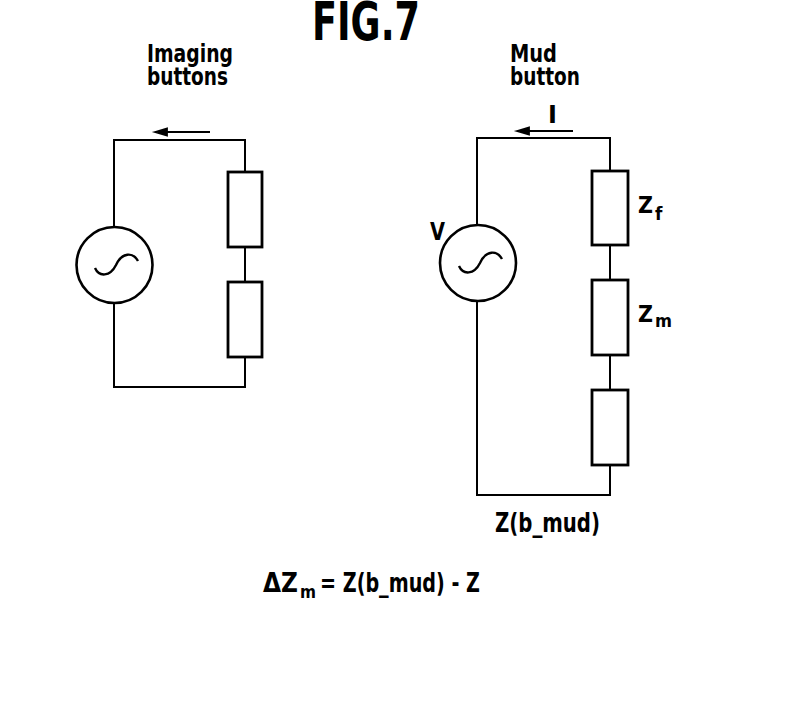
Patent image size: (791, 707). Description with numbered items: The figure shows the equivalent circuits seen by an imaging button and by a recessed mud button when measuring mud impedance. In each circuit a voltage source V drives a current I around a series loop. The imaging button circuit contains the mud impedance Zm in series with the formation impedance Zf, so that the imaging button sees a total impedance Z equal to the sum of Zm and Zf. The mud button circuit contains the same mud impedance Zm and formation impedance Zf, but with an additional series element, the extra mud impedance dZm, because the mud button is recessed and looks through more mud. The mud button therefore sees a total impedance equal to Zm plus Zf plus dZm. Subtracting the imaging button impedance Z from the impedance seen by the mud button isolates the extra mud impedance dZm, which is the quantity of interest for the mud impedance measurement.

The voltage source V is at (110, 260).
The formation impedance Zf is at (263, 209).
The mud impedance Zm is at (267, 319).
The extra mud impedance dZm is at (639, 427).
The imaging button impedance Z is at (179, 409).
The current I is at (182, 118).